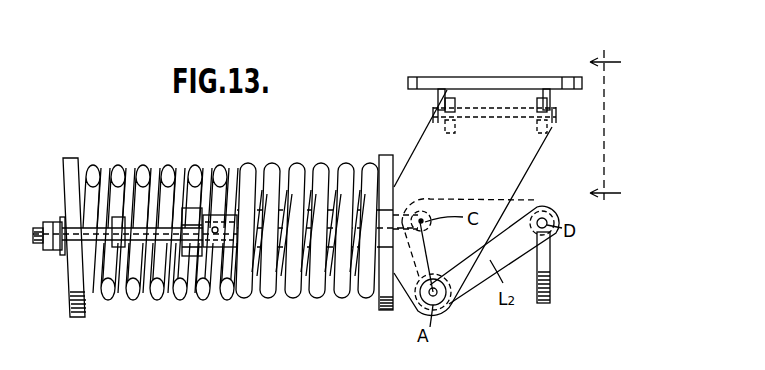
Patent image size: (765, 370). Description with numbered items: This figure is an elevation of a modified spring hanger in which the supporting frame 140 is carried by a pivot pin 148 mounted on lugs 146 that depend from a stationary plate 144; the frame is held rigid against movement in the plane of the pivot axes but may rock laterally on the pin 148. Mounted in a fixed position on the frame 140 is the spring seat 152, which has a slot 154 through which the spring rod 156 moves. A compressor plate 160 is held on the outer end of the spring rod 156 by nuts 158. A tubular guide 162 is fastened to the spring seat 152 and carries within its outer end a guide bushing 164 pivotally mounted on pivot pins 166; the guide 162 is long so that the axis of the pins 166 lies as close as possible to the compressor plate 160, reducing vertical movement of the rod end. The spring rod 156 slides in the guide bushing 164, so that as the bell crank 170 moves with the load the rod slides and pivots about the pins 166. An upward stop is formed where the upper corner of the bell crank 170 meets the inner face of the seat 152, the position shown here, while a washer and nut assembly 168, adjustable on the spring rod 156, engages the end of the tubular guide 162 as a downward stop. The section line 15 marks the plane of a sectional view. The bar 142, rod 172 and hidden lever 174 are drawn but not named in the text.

The section line 15— 15 is at (605, 129).
The supporting frame 140 is at (532, 160).
The mounting bar 142 is at (582, 82).
The stationary plate 144 is at (547, 78).
The lugs 146 is at (448, 90).
The pivot pin 148 is at (502, 105).
The spring seat 152 is at (387, 155).
The slot 154 is at (353, 263).
The spring rod 156 is at (175, 300).
The nuts 158 is at (47, 220).
The compressor plate 160 is at (72, 158).
The tubular guide 162 is at (313, 205).
The guide bushing 164 is at (230, 212).
The pivot pins 166 is at (222, 186).
The washer and nut assembly 168 is at (122, 300).
The bell crank 170 is at (480, 292).
The threaded rod 172 is at (550, 270).
The hidden lever 174 is at (435, 193).